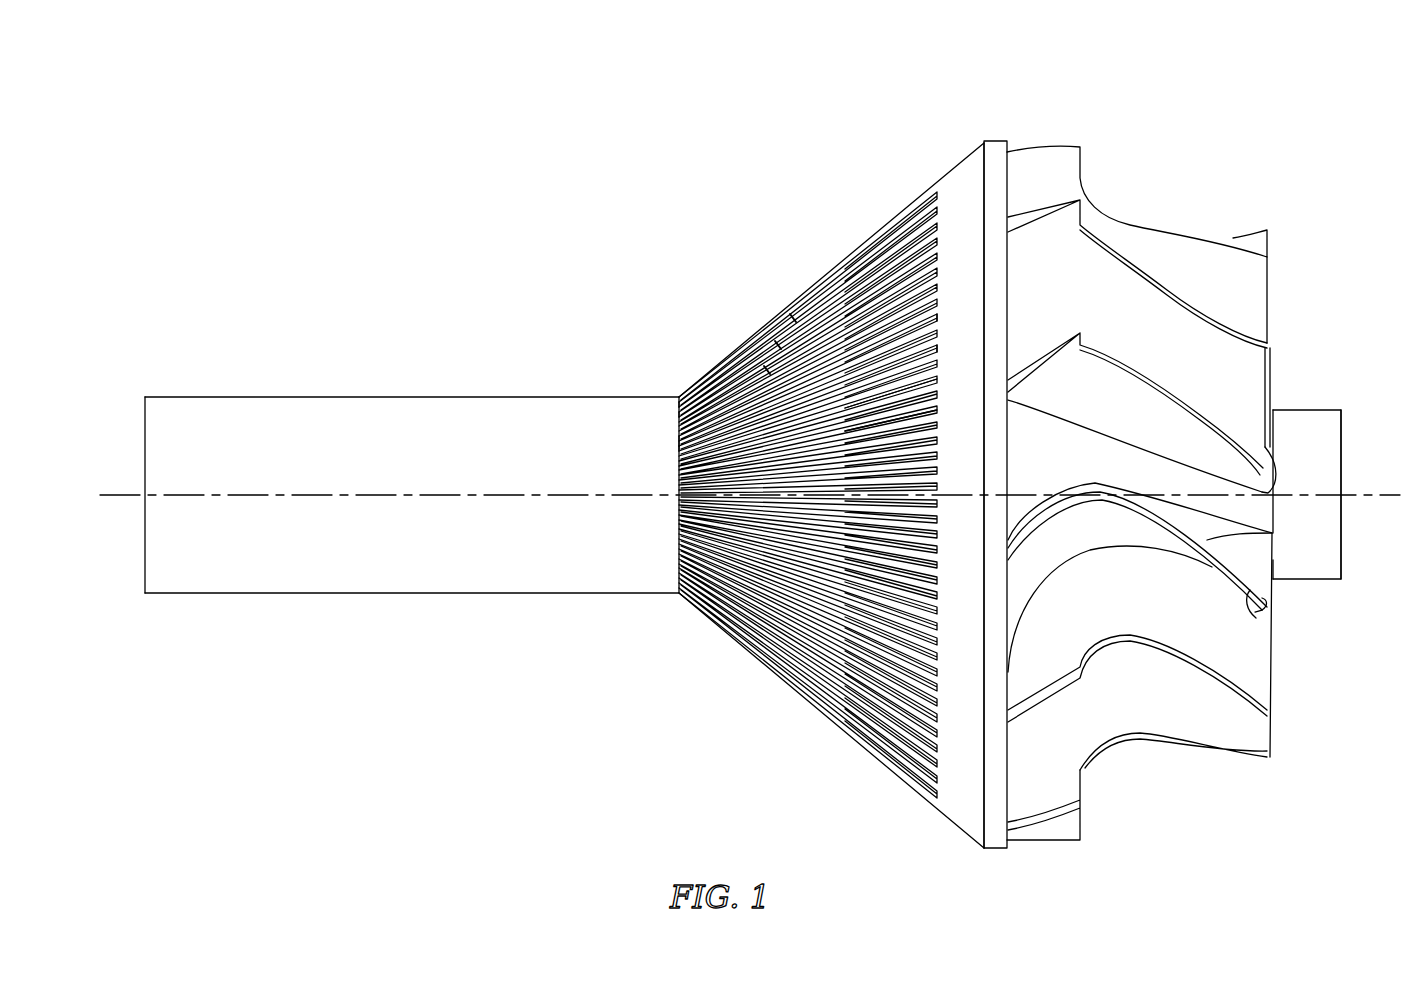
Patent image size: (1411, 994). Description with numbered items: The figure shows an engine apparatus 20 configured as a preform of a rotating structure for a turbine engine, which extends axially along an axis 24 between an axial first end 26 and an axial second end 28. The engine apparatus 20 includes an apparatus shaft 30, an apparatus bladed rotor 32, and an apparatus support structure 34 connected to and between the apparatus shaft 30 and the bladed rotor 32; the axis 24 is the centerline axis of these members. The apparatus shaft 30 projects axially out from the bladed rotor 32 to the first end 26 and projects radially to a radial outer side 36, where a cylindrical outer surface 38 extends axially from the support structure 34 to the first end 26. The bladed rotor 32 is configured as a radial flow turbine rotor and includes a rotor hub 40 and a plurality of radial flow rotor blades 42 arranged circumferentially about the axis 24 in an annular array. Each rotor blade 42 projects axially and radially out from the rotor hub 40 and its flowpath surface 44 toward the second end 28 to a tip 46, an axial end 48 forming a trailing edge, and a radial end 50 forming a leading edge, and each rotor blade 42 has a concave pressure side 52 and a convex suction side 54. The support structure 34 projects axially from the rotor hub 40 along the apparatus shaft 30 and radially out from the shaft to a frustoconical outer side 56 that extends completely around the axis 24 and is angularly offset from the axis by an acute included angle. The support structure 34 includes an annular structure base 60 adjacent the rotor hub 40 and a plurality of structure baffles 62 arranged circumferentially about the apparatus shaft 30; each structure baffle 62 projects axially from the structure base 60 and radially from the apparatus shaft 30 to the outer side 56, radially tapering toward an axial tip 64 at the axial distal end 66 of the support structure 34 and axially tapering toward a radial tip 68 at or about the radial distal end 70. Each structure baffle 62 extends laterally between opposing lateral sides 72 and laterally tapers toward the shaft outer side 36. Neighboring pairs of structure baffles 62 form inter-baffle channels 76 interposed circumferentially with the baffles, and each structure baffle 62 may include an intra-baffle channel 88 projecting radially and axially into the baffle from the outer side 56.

The engine apparatus 20 is at (1243, 102).
The axis 24 is at (108, 490).
The axial first end 26 is at (145, 568).
The axial second end 28 is at (1342, 552).
The apparatus shaft 30 is at (392, 477).
The apparatus bladed rotor 32 is at (1180, 489).
The apparatus support structure 34 is at (764, 461).
The radial outer side 36 is at (190, 397).
The cylindrical outer surface 38 is at (412, 347).
The rotor hub 40 is at (1334, 469).
The radial flow rotor blades 42 is at (1163, 263).
The flowpath surface 44 is at (1188, 483).
The tip 46 is at (1275, 533).
The axial end 48 is at (1258, 630).
The radial end 50 is at (1048, 527).
The pressure side 52 is at (1255, 612).
The suction side 54 is at (1252, 572).
The outer side 56 is at (815, 282).
The annular structure base 60 is at (968, 147).
The structure baffles 62 is at (778, 345).
The axial tip 64 is at (680, 445).
The axial distal end 66 is at (611, 443).
The radial tip 68 is at (927, 190).
The radial distal end 70 is at (996, 141).
The lateral sides 72 is at (693, 392).
The inter-baffle channel 76 is at (937, 313).
The intra-baffle channel 88 is at (937, 378).